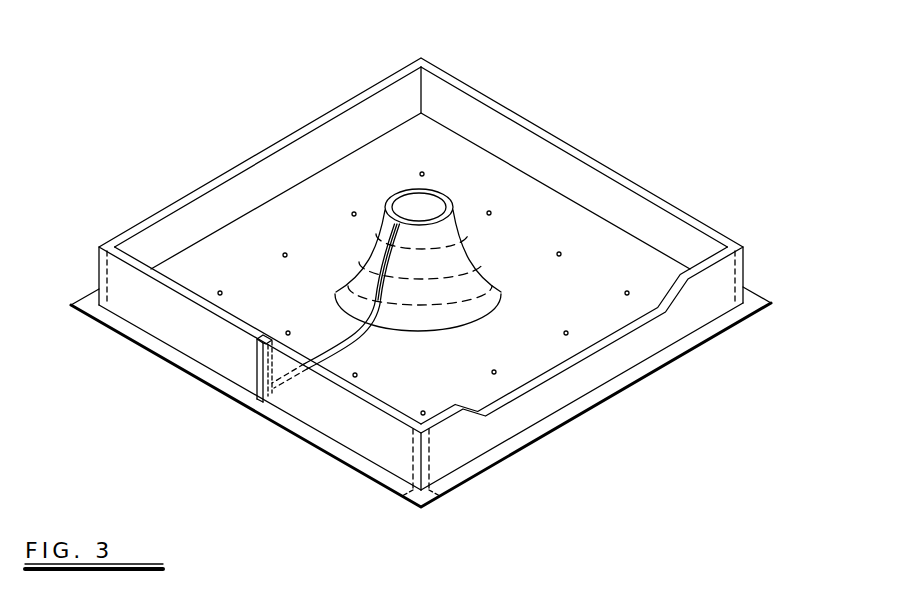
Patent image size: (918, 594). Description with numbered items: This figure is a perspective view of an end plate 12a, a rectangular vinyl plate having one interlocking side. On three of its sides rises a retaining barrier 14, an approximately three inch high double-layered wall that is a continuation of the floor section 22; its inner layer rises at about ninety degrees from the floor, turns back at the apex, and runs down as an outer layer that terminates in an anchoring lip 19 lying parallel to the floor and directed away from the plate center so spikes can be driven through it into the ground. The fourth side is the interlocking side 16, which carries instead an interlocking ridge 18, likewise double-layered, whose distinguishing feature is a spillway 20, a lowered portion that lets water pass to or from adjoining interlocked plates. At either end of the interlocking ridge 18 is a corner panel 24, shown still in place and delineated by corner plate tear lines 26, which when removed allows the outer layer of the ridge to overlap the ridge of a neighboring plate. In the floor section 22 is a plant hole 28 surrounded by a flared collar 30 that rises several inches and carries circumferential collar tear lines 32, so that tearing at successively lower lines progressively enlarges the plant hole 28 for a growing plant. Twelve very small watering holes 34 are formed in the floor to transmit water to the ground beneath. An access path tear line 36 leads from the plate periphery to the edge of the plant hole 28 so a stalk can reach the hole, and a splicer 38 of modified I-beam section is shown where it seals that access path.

The end plate 12a is at (146, 100).
The retaining barrier 14 is at (614, 177).
The interlocking side 16 is at (647, 395).
The interlocking ridge 18 is at (714, 292).
The anchoring lip 19 is at (322, 452).
The spillway 20 is at (646, 326).
The floor section 22 is at (578, 274).
The corner panel 24 is at (757, 305).
The corner plate tear line 26 is at (412, 467).
The plant hole 28 is at (427, 191).
The flared collar 30 is at (384, 233).
The collar tear line 32 is at (494, 283).
The watering hole 34 is at (420, 174).
The access path tear line 36 is at (318, 353).
The splicer 38 is at (357, 352).